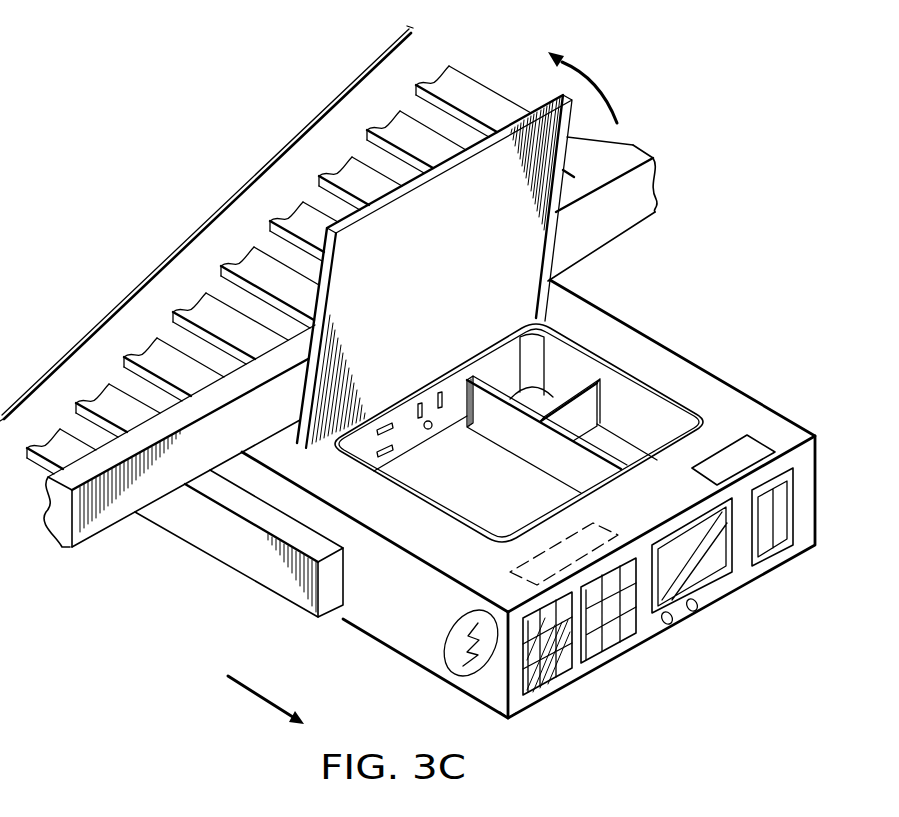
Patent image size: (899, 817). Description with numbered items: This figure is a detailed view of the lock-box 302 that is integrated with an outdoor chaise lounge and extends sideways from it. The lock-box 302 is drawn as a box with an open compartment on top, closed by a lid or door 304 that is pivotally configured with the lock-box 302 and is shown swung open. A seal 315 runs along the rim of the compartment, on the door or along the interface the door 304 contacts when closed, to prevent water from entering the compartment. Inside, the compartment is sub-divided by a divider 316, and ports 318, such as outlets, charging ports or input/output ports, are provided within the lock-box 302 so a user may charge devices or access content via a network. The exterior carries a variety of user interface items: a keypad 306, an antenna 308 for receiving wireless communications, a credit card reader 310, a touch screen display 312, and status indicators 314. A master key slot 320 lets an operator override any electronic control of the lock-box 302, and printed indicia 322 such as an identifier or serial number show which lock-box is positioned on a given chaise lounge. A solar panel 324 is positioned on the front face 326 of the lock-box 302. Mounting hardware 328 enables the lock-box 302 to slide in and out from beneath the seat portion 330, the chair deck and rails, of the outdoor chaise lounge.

The lock-box 302 is at (687, 315).
The lid or door 304 is at (473, 146).
The keypad 306 is at (610, 640).
The antenna 308 is at (563, 557).
The credit card reader 310 is at (774, 507).
The touch screen display 312 is at (698, 565).
The status indicator 314 is at (697, 606).
The seal 315 is at (680, 407).
The divider 316 is at (576, 384).
The ports 318 is at (444, 401).
The master key slot 320 is at (452, 646).
The printed indicia 322 is at (757, 437).
The solar panel 324 is at (546, 676).
The front face 326 is at (518, 706).
The mounting hardware 328 is at (244, 563).
The seat portion 330 is at (213, 222).